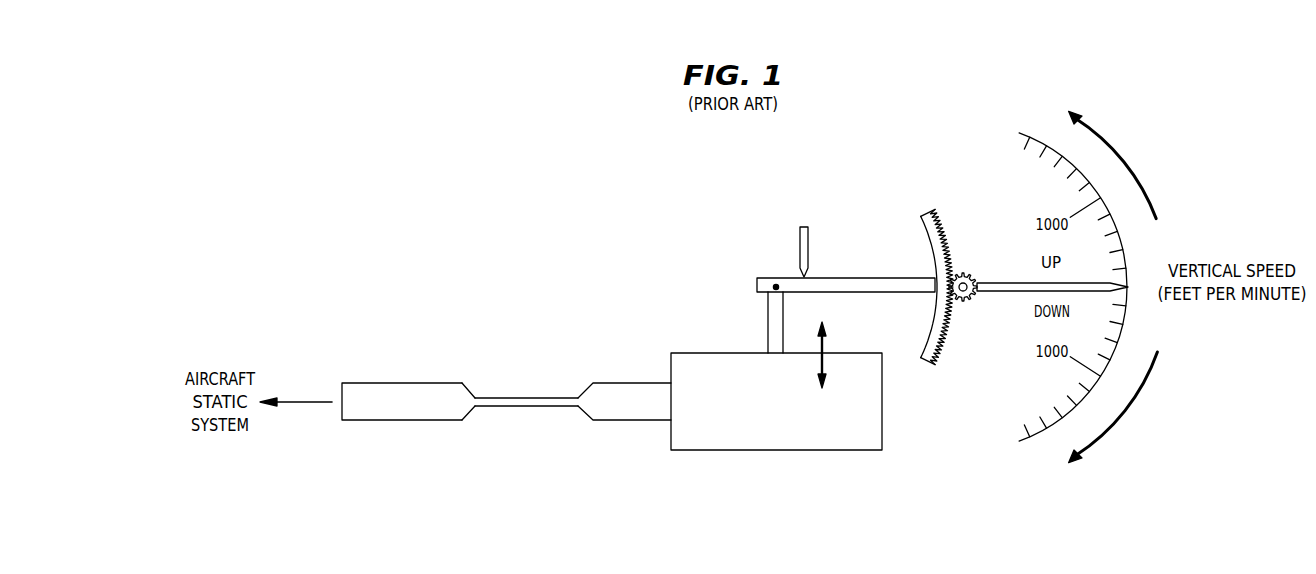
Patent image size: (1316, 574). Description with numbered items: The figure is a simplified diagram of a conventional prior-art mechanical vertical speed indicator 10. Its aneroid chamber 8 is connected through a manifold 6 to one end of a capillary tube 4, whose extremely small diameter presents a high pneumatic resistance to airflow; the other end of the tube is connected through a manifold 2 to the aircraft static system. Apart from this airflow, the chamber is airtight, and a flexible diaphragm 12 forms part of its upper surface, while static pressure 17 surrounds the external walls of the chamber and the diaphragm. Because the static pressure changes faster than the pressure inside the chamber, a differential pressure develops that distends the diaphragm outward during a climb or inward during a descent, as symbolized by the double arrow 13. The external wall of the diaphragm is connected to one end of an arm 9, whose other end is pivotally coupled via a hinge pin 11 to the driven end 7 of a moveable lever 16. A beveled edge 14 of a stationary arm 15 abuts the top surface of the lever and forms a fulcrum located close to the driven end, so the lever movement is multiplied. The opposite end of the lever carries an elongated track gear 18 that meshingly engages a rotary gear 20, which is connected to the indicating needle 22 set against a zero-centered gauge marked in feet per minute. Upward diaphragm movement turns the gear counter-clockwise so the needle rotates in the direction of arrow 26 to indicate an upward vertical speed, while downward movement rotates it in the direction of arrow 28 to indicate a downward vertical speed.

The manifold 2 is at (405, 383).
The capillary tube 4 is at (533, 398).
The manifold 6 is at (622, 420).
The driven end of lever 7 is at (762, 293).
The aneroid chamber 8 is at (790, 450).
The arm 9 is at (783, 313).
The vertical speed indicator 10 is at (459, 181).
The hinge pin 11 is at (757, 286).
The flexible diaphragm 12 is at (843, 353).
The double arrow 13 is at (826, 368).
The beveled edge 14 is at (788, 266).
The stationary arm 15 is at (810, 245).
The moveable lever 16 is at (899, 264).
The static pressure 17 is at (677, 270).
The track gear 18 is at (941, 335).
The rotary gear 20 is at (965, 272).
The indicating needle 22 is at (1085, 281).
The arrow 26 is at (1130, 166).
The arrow 28 is at (1133, 405).